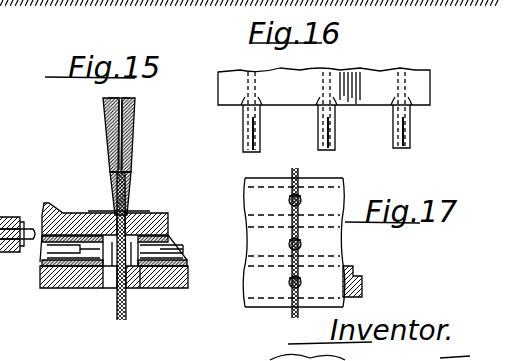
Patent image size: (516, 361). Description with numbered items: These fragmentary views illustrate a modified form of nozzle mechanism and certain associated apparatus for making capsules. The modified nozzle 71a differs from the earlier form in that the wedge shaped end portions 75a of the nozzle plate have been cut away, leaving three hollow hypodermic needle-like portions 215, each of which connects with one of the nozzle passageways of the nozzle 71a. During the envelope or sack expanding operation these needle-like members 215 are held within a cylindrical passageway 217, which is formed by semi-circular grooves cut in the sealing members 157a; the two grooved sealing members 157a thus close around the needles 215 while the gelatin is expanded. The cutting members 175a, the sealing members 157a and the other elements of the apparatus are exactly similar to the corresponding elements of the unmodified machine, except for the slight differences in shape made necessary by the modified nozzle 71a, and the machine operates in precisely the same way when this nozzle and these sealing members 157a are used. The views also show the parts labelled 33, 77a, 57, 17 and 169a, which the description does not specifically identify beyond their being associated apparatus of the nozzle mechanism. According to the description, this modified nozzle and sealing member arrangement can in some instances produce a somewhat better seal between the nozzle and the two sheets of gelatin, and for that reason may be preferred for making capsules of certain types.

In FIG. 15, the needle blade 33 is at (103, 121).
In FIG. 17, the needle blade 33 is at (297, 172).
In FIG. 15, the modified nozzle 71a is at (155, 91).
In FIG. 16, the modified nozzle 71a is at (367, 72).
In FIG. 15, the blade slot 77a is at (171, 147).
In FIG. 16, the blade slot 77a is at (322, 91).
In FIG. 15, the wedge shaped end portions of the nozzle plate 75a is at (167, 165).
In FIG. 16, the wedge shaped end portions of the nozzle plate 75a is at (297, 70).
In FIG. 15, the shaft 57 is at (22, 216).
In FIG. 15, the guide plate 17 is at (153, 203).
In FIG. 15, the sealing members 157a is at (60, 212).
In FIG. 17, the sealing members 157a is at (370, 253).
In FIG. 15, the hollow hypodermic needle-like portions 215 is at (170, 216).
In FIG. 16, the hollow hypodermic needle-like portions 215 is at (318, 128).
In FIG. 17, the hollow hypodermic needle-like portions 215 is at (289, 200).
In FIG. 15, the cylindrical passageway 217 is at (111, 212).
In FIG. 17, the cylindrical passageway 217 is at (300, 203).
In FIG. 15, the bushing 169a is at (100, 264).
In FIG. 15, the cutting members 175a is at (40, 264).
In FIG. 17, the cutting members 175a is at (392, 287).